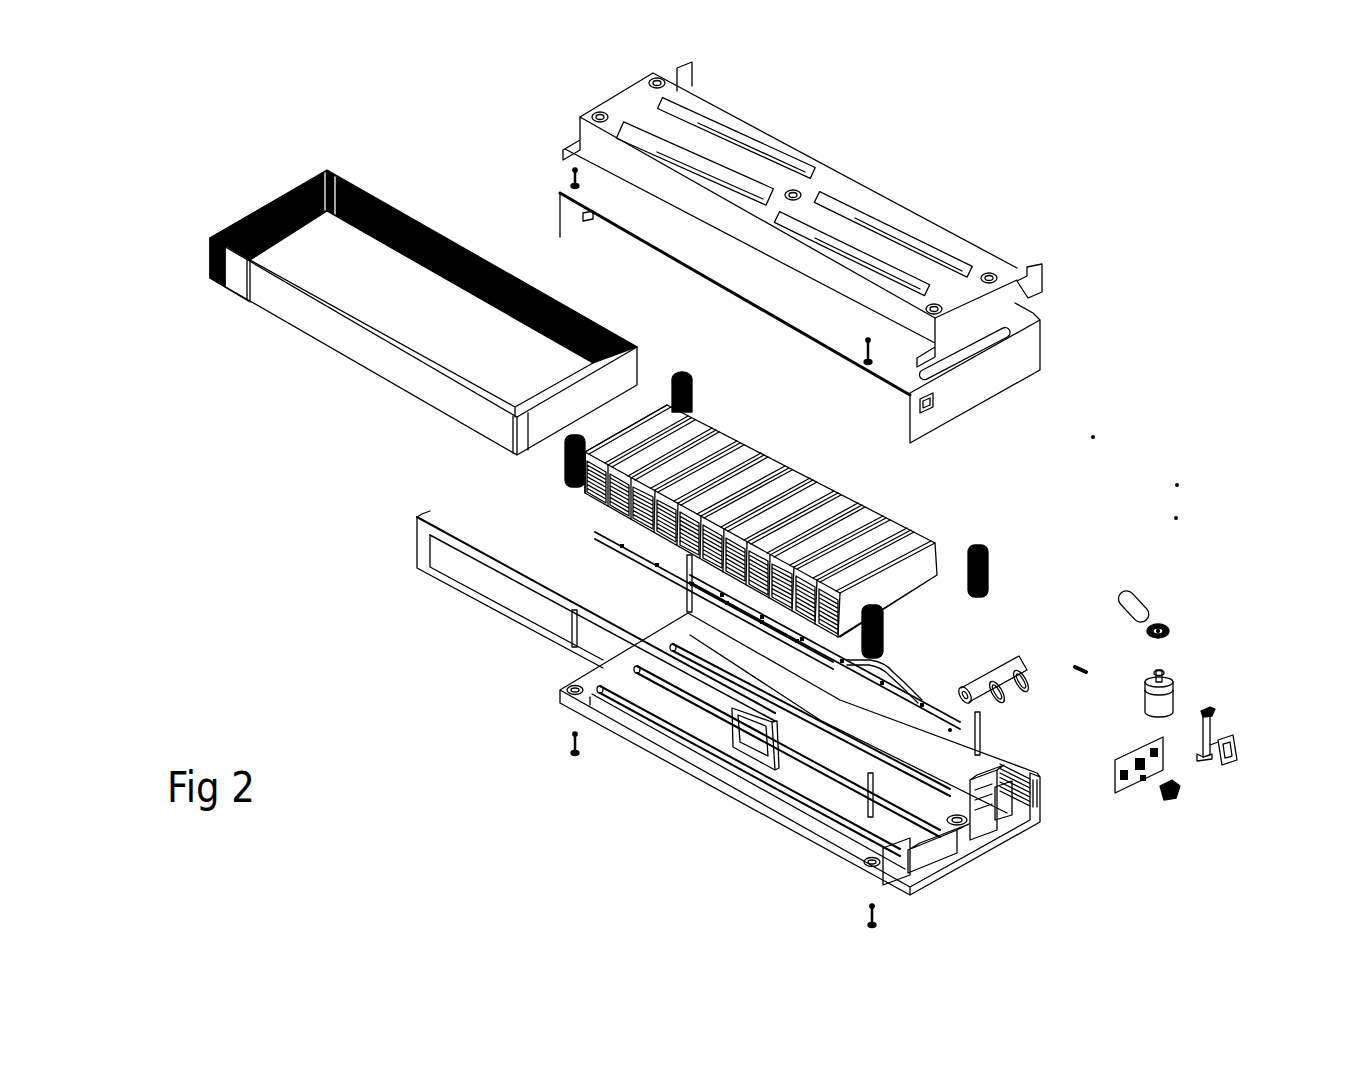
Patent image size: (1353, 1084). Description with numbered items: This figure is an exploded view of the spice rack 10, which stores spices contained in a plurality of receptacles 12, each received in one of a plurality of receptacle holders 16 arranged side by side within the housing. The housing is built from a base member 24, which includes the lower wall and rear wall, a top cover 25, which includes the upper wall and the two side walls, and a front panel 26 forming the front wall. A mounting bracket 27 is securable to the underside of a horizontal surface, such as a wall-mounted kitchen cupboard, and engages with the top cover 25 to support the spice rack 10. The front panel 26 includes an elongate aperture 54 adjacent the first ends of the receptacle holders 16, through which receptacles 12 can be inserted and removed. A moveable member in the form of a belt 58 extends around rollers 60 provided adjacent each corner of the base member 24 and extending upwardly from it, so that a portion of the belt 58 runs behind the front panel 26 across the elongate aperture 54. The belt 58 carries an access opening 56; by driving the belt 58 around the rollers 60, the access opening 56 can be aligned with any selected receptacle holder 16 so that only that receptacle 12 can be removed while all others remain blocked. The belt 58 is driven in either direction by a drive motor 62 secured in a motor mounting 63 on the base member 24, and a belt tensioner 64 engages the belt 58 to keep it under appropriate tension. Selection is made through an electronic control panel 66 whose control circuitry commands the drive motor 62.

The spice rack 10 is at (1111, 221).
The receptacles 12 is at (712, 515).
The receptacle holders 16 is at (600, 518).
The base member 24 is at (838, 740).
The top cover 25 is at (1023, 355).
The front panel 26 is at (506, 616).
The mounting bracket 27 is at (970, 273).
The elongate aperture 54 is at (492, 583).
The access opening 56 is at (238, 278).
The belt 58 is at (402, 207).
The rollers 60 is at (682, 355).
The drive motor 62 is at (1178, 683).
The motor mounting 63 is at (1017, 815).
The belt tensioner 64 is at (1223, 767).
The electronic control panel 66 is at (747, 732).